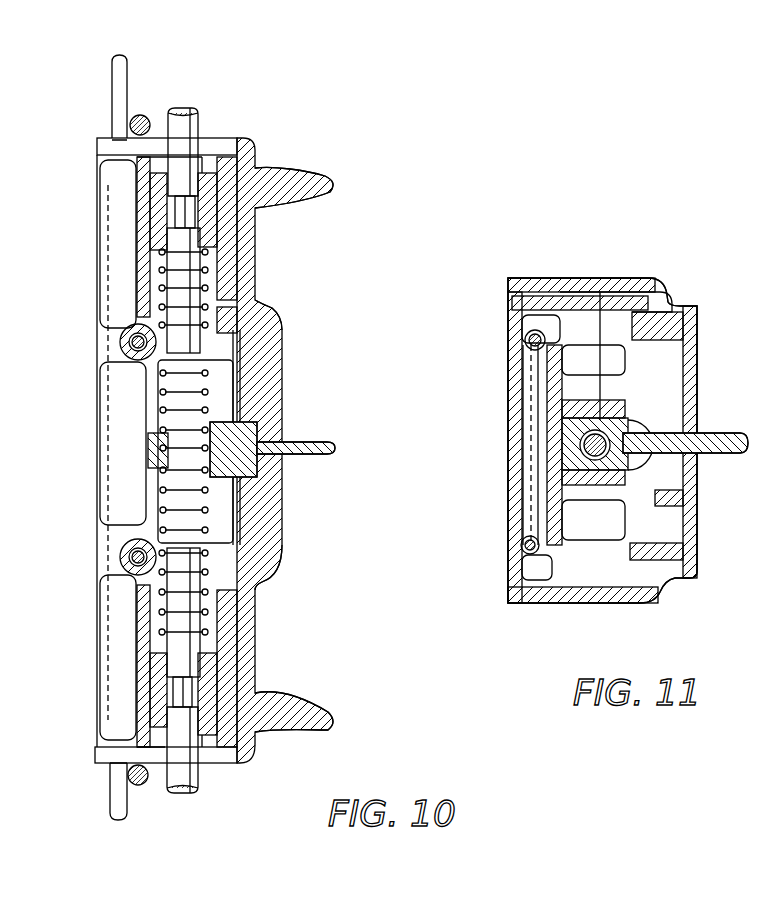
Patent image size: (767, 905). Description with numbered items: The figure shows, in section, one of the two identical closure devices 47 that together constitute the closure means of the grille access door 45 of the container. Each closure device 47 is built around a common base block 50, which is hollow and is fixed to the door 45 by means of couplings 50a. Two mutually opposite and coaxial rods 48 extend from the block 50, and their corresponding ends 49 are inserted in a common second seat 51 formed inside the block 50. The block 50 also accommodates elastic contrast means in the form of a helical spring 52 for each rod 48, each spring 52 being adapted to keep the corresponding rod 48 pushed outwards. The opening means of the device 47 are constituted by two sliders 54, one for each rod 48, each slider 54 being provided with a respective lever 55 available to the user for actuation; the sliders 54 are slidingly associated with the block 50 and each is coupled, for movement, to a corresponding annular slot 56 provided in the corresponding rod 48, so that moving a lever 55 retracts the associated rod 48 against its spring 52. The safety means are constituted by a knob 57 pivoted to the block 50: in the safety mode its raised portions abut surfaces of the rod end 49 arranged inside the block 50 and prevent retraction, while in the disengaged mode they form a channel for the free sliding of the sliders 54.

In FIG. 10, the access door 45 is at (130, 550).
In FIG. 10, the closure device 47 is at (68, 260).
In FIG. 11, the closure device 47 is at (548, 620).
In FIG. 10, the rod 48 is at (193, 125).
In FIG. 11, the rod 48 is at (562, 430).
In FIG. 10, the end 49 is at (217, 333).
In FIG. 10, the base block 50 is at (257, 213).
In FIG. 10, the coupling 50a is at (128, 323).
In FIG. 10, the second seat 51 is at (213, 393).
In FIG. 11, the second seat 51 is at (603, 287).
In FIG. 10, the helical spring 52 is at (212, 500).
In FIG. 10, the slider 54 is at (212, 195).
In FIG. 10, the lever 55 is at (310, 173).
In FIG. 10, the annular slot 56 is at (157, 202).
In FIG. 10, the knob 57 is at (318, 435).
In FIG. 11, the knob 57 is at (685, 443).